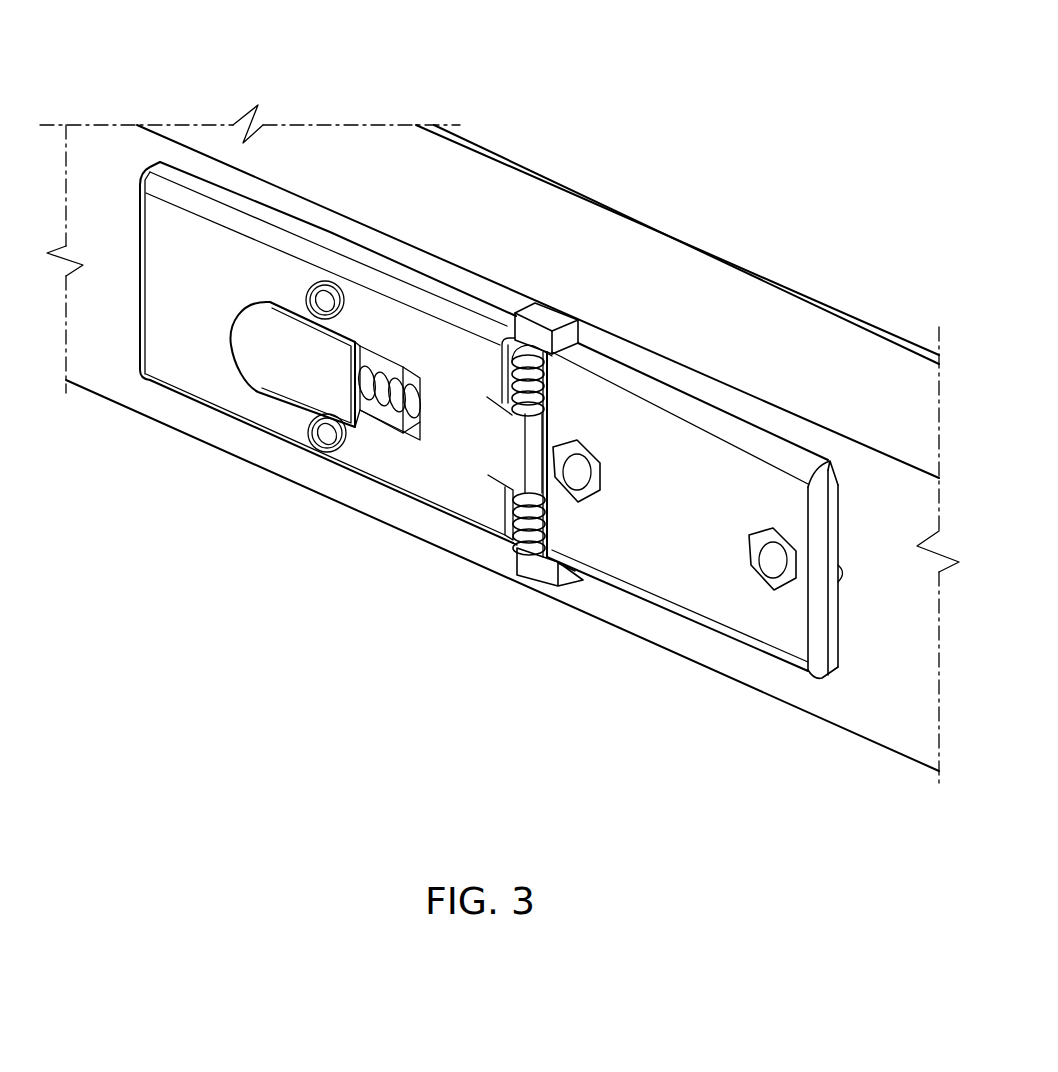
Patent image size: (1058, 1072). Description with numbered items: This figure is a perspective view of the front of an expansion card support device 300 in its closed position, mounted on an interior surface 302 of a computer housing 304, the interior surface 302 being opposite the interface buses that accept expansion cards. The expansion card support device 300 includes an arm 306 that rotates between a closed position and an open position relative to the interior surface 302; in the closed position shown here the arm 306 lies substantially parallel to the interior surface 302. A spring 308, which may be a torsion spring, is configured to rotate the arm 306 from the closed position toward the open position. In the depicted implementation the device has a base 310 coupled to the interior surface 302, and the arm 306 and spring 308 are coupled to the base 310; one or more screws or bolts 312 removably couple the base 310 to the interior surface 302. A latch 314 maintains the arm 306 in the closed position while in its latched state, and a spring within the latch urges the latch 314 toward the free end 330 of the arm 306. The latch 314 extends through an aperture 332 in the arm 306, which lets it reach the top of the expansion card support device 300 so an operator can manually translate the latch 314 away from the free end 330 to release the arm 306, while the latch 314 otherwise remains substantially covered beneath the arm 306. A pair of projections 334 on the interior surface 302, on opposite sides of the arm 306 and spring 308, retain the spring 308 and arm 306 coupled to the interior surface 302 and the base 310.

The expansion card support device 300 is at (560, 634).
The interior surface 302 is at (887, 678).
The computer housing 304 is at (668, 167).
The arm 306 is at (297, 328).
The spring 308 is at (521, 547).
The base 310 is at (693, 483).
The screws or bolts 312 is at (770, 557).
The latch 314 is at (282, 333).
The free end 330 is at (142, 293).
The aperture 332 is at (393, 404).
The pair of projections 334 is at (538, 330).